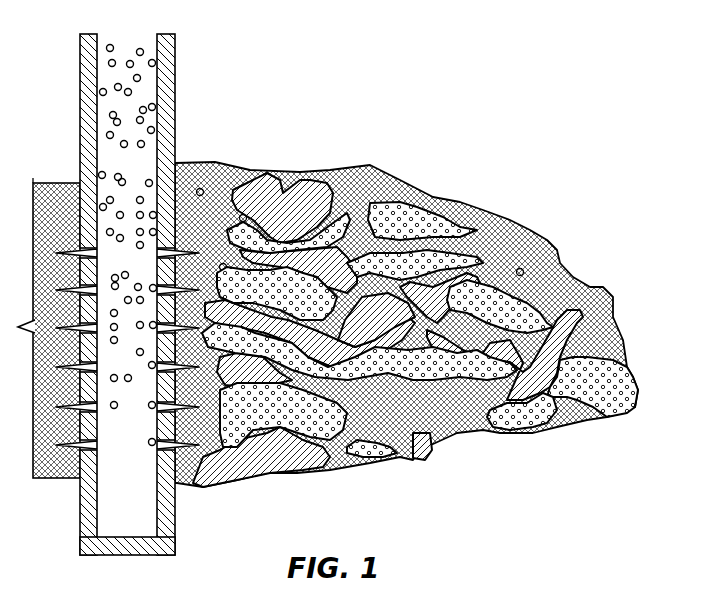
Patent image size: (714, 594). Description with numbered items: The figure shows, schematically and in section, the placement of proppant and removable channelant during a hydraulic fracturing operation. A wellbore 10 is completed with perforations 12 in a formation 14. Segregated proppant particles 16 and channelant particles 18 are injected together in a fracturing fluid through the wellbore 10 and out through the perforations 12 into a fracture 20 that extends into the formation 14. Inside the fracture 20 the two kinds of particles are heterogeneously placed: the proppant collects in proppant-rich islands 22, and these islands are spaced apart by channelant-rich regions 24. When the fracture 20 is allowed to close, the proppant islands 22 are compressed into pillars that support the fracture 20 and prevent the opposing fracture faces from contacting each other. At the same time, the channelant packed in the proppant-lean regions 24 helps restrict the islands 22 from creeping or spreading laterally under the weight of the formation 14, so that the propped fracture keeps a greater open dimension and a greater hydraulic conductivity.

The wellbore 10 is at (162, 76).
The perforations 12 is at (176, 252).
The formation 14 is at (377, 88).
The proppant particles 16 is at (108, 61).
The channelant particles 18 is at (114, 177).
The fracture 20 is at (466, 196).
The proppant-rich islands 22 is at (520, 306).
The channelant-rich regions 24 is at (587, 320).